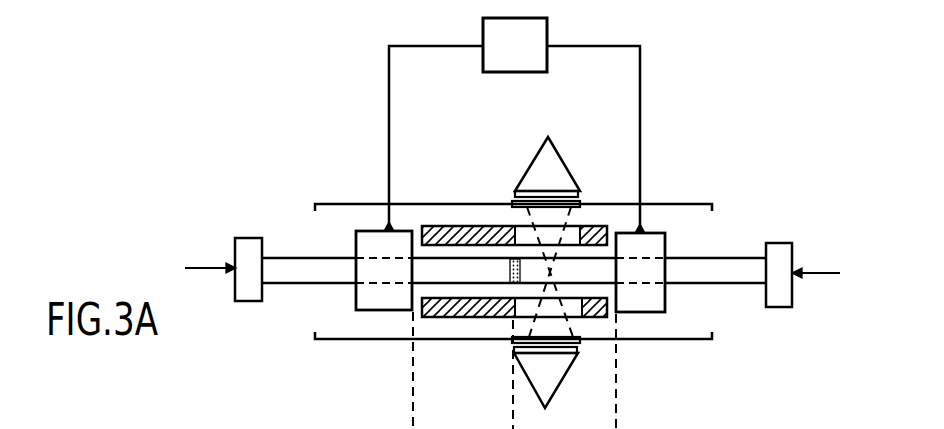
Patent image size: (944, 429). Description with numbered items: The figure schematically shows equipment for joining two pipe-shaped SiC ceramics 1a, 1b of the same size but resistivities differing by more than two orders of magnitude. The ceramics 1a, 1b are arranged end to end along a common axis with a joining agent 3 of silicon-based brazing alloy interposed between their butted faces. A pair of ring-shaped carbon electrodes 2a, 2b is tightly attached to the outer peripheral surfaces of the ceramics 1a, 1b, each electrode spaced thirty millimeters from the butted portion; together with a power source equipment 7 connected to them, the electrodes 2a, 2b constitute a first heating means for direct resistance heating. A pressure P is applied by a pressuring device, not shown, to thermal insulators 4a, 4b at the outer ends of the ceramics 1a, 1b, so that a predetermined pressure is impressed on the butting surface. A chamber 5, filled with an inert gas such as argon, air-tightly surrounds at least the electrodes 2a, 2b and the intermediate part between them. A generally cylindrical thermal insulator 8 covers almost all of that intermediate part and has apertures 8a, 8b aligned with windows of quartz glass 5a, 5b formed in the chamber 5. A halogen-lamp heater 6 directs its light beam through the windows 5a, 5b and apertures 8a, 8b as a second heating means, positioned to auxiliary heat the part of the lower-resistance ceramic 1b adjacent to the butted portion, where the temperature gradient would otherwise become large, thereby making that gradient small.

The SiC ceramic 1a is at (422, 275).
The SiC ceramic 1b is at (598, 274).
The ring-shaped carbon electrode 2a is at (364, 244).
The ring-shaped carbon electrode 2b is at (658, 247).
The joining agent 3 is at (512, 258).
The thermal insulator 4a is at (240, 248).
The thermal insulator 4b is at (788, 253).
The chamber 5 is at (322, 201).
The quartz glass window 5a is at (582, 203).
The quartz glass window 5b is at (582, 344).
The halogen-lamp heater 6 is at (545, 152).
The power source equipment 7 is at (540, 38).
The thermal insulator 8 is at (477, 232).
The aperture 8a is at (525, 310).
The aperture 8b is at (592, 242).
The pressure P is at (512, 270).